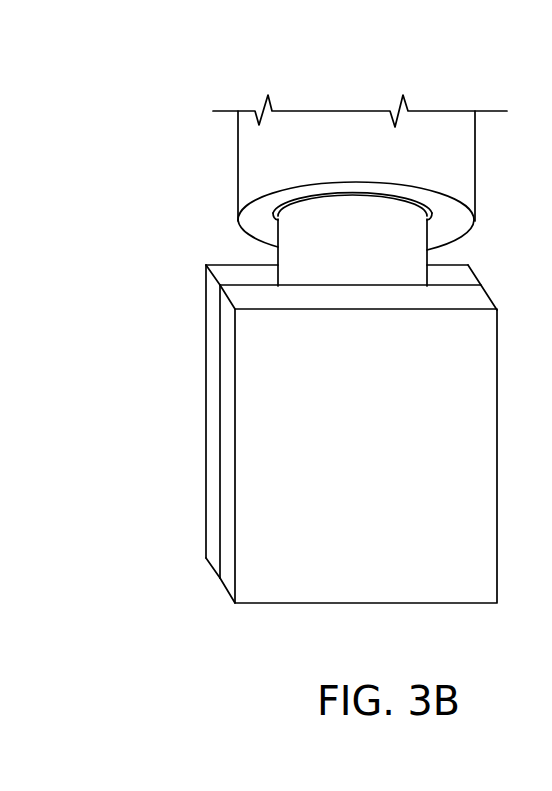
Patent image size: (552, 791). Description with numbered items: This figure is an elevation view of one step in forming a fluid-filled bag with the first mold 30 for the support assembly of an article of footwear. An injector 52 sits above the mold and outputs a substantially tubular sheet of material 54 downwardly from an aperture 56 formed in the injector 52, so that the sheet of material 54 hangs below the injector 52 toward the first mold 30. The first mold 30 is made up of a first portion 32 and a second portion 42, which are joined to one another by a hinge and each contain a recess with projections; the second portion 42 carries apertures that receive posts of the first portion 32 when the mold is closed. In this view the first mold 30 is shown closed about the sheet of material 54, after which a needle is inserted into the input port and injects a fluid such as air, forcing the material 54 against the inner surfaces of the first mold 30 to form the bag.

The first mold 30 is at (379, 508).
The first portion 32 is at (213, 382).
The second portion 42 is at (223, 523).
The injector 52 is at (465, 149).
The sheet of material 54 is at (412, 259).
The aperture 56 is at (350, 194).